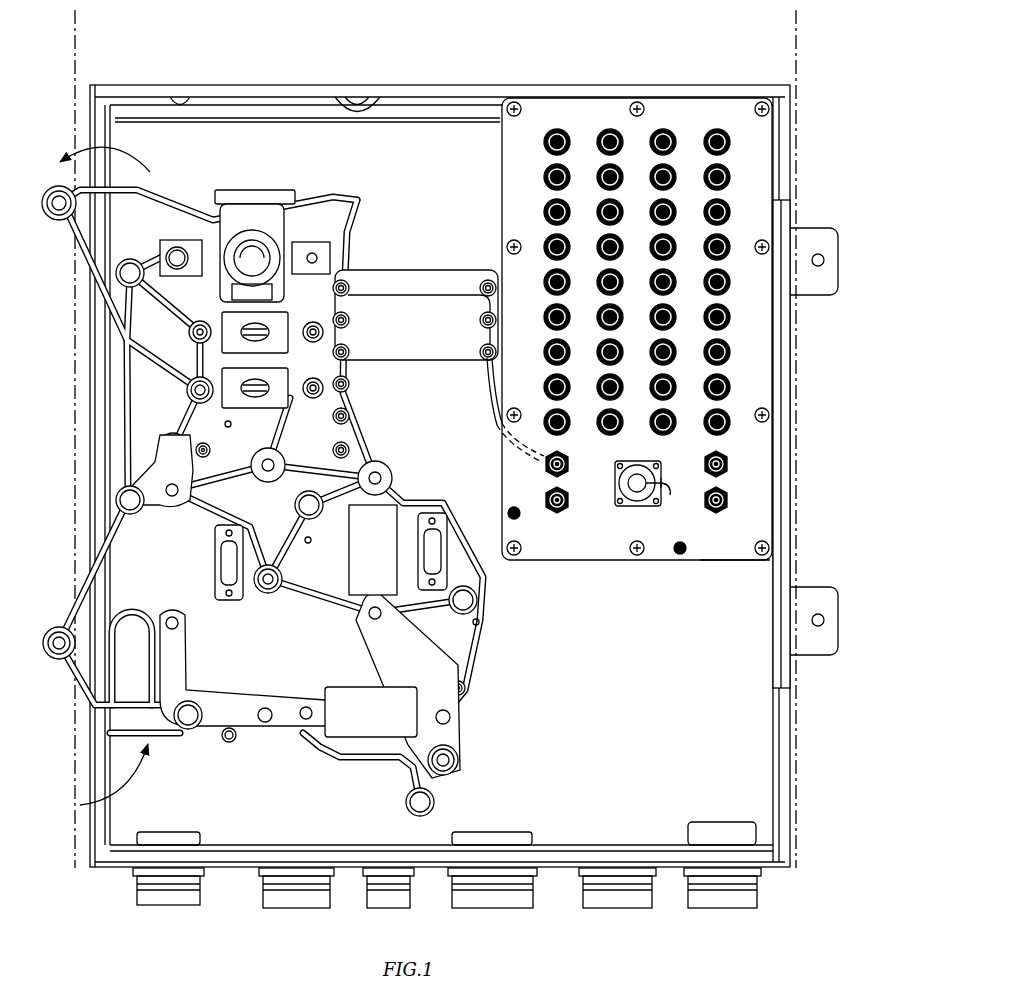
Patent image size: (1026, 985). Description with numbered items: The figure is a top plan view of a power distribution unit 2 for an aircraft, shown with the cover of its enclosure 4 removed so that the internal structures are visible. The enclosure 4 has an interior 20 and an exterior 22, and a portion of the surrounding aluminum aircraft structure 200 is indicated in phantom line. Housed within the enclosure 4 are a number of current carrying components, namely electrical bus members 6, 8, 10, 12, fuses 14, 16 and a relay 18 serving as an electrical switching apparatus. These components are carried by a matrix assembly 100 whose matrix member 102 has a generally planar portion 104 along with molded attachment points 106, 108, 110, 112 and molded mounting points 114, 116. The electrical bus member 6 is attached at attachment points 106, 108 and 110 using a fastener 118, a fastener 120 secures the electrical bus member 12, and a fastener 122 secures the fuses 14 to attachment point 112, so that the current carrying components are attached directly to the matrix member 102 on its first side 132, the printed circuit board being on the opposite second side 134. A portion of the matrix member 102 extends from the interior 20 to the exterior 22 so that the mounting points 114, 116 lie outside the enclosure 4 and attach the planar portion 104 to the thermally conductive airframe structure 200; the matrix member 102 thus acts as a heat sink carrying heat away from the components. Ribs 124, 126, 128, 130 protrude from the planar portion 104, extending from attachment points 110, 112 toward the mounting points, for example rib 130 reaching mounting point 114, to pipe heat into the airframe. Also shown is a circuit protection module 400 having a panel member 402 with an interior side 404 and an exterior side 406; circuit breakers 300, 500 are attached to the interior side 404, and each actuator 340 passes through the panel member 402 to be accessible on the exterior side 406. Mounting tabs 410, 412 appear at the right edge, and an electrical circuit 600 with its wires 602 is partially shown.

The power distribution unit 2 is at (160, 949).
The enclosure 4 is at (92, 852).
The electrical bus member 6 is at (456, 690).
The electrical bus member 8 is at (240, 730).
The electrical bus member 10 is at (396, 288).
The electrical bus member 12 is at (160, 470).
The fuse 14 is at (278, 398).
The fuse 16 is at (276, 343).
The relay 18 is at (280, 218).
The interior 20 is at (742, 740).
The exterior 22 is at (92, 163).
The matrix assembly 100 is at (75, 672).
The matrix member 102 is at (490, 628).
The generally planar portion 104 is at (269, 650).
The attachment point 106 is at (468, 764).
The attachment point 108 is at (468, 714).
The attachment point 110 is at (371, 712).
The attachment point 112 is at (180, 382).
The mounting point 114 is at (56, 626).
The mounting point 116 is at (58, 222).
The fastener 118 is at (446, 786).
The fastener 120 is at (170, 440).
The fastener 122 is at (188, 365).
The rib 124 is at (322, 660).
The rib 126 is at (326, 541).
The rib 128 is at (231, 435).
The rib 130 is at (128, 516).
The first side 132 is at (115, 565).
The second side 134 is at (108, 803).
The aircraft structure 200 is at (86, 44).
The circuit breaker 300 is at (646, 478).
The actuator 340 is at (572, 502).
The circuit protection module 400 is at (492, 190).
The panel member 402 is at (699, 552).
The interior side 404 is at (622, 560).
The exterior side 406 is at (581, 551).
The mounting tab 410 is at (805, 238).
The mounting tab 412 is at (805, 597).
The electrical switching apparatus 500 is at (544, 317).
The electrical circuit 600 is at (464, 410).
The wire 602 is at (492, 412).